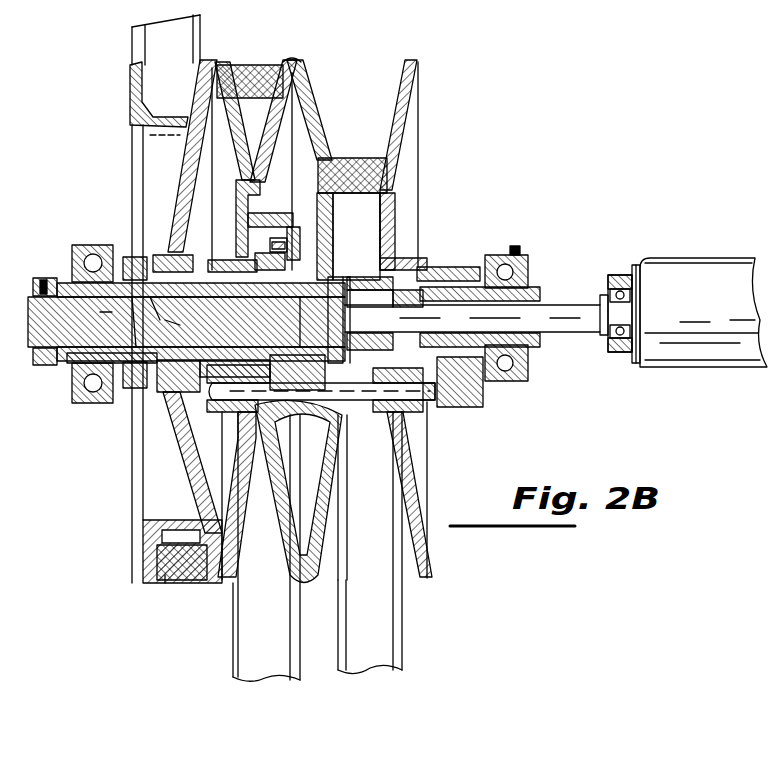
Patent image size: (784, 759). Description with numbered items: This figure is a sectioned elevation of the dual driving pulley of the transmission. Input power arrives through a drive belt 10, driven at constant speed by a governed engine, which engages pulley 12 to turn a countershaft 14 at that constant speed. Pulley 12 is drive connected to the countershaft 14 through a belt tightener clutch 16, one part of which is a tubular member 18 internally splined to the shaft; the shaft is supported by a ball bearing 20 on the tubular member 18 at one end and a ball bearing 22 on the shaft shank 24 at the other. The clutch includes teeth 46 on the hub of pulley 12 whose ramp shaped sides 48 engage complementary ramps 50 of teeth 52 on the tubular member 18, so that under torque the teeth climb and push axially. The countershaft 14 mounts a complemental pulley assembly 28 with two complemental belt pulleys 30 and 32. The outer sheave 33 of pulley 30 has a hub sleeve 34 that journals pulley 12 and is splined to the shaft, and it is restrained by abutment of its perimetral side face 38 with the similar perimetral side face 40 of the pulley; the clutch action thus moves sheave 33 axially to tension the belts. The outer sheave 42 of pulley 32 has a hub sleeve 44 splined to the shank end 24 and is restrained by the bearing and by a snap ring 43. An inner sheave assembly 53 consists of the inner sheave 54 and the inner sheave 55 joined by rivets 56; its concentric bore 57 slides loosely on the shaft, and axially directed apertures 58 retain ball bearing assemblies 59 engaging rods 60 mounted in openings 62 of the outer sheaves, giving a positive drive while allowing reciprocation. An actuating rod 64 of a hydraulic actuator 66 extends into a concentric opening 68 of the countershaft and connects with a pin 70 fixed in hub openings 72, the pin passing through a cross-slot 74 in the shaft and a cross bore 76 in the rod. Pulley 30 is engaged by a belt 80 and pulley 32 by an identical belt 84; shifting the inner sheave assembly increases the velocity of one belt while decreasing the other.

The drive belt 10 is at (155, 42).
The pulley 12 is at (162, 133).
The countershaft 14 is at (238, 333).
The belt tightener clutch 16 is at (124, 240).
The tubular member 18 is at (70, 278).
The ball bearing 20 is at (88, 246).
The ball bearing 22 is at (524, 270).
The shaft shank 24 is at (530, 286).
The complemental pulley assembly 28 is at (305, 60).
The complemental belt pulley 30 is at (247, 108).
The complemental belt pulley 32 is at (346, 118).
The outer sheave 33 is at (240, 540).
The hub sleeve 34 is at (165, 395).
The perimetral side face 38 is at (203, 582).
The perimetral side face 40 is at (180, 576).
The outer sheave 42 is at (432, 546).
The snap ring 43 is at (420, 266).
The hub sleeve 44 is at (455, 366).
The teeth 46 is at (102, 309).
The ramp shaped sides 48 is at (123, 322).
The ramps 50 is at (168, 308).
The teeth 52 is at (187, 314).
The inner sheave assembly 53 is at (291, 56).
The inner sheave 54 is at (290, 555).
The inner sheave 55 is at (316, 580).
The rivets 56 is at (280, 244).
The concentric bore 57 is at (277, 320).
The axially directed apertures 58 is at (296, 368).
The ball bearing assemblies 59 is at (344, 396).
The rods 60 is at (357, 497).
The openings 62 is at (216, 403).
The actuating rod 64 is at (568, 318).
The actuator 66 is at (680, 362).
The concentric opening 68 is at (525, 308).
The pin 70 is at (338, 290).
The hub openings 72 is at (343, 262).
The cross-slot 74 is at (352, 290).
The cross bore 76 is at (385, 292).
The belt 80 is at (248, 636).
The belt 84 is at (382, 630).